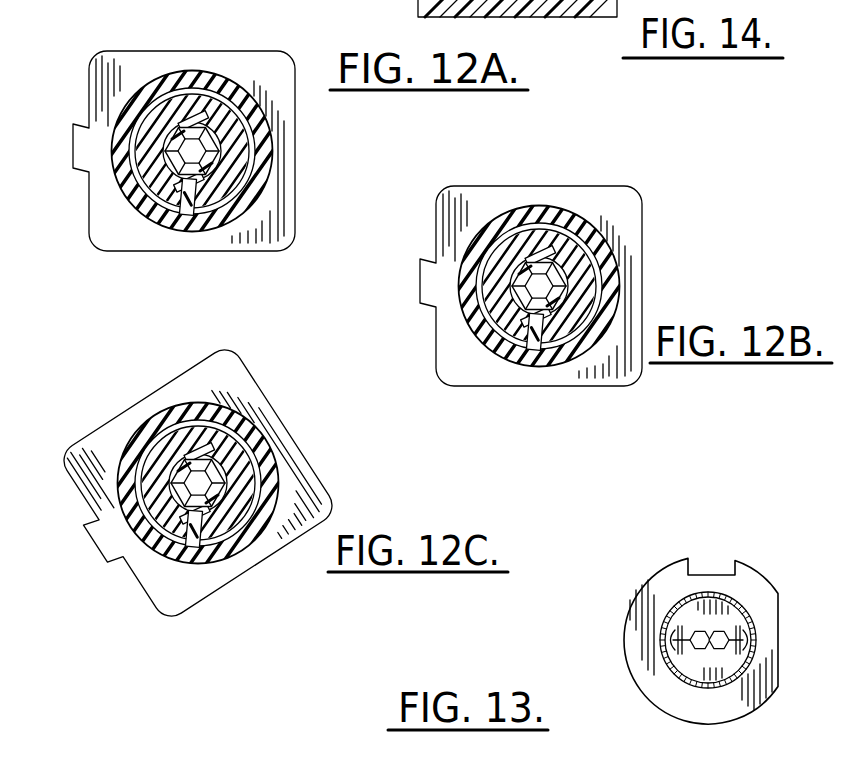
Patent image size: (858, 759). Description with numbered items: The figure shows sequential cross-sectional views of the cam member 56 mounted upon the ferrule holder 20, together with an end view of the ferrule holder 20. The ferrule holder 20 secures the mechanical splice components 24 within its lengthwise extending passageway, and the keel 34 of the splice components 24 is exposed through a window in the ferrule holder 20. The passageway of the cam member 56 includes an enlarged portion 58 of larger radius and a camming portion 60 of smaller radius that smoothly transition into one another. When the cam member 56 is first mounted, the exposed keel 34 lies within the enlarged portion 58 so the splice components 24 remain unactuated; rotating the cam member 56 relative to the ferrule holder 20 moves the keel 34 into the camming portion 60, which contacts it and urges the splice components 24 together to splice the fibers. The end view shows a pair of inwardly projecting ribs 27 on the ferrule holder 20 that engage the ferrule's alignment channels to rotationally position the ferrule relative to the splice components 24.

In FIG. 12A, the ferrule holder 20 is at (170, 95).
In FIG. 12B, the ferrule holder 20 is at (507, 228).
In FIG. 12C, the ferrule holder 20 is at (247, 470).
In FIG. 13, the ferrule holder 20 is at (745, 585).
In FIG. 12A, the splice components 24 is at (185, 140).
In FIG. 12B, the splice components 24 is at (516, 274).
In FIG. 12C, the splice components 24 is at (188, 462).
In FIG. 13, the splice components 24 is at (710, 617).
In FIG. 13, the inwardly projecting ribs 27 is at (675, 640).
In FIG. 12A, the keel 34 is at (198, 195).
In FIG. 12B, the keel 34 is at (545, 350).
In FIG. 12C, the keel 34 is at (200, 545).
In FIG. 12A, the cam member 56 is at (305, 38).
In FIG. 12B, the cam member 56 is at (650, 172).
In FIG. 12C, the cam member 56 is at (312, 405).
In FIG. 13, the cam member 56 is at (565, 660).
In FIG. 12A, the enlarged portion 58 is at (173, 230).
In FIG. 12B, the enlarged portion 58 is at (515, 358).
In FIG. 12C, the enlarged portion 58 is at (180, 547).
In FIG. 12A, the camming portion 60 is at (193, 97).
In FIG. 12B, the camming portion 60 is at (538, 228).
In FIG. 12C, the camming portion 60 is at (167, 428).